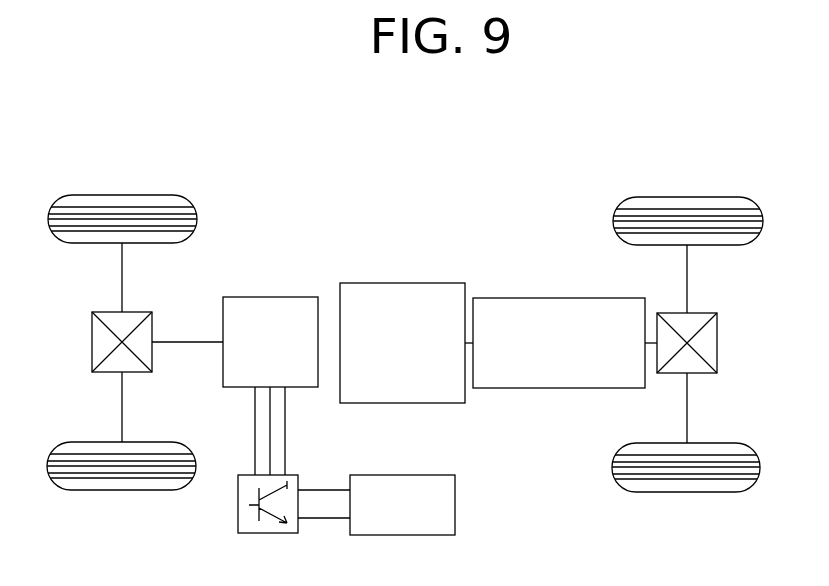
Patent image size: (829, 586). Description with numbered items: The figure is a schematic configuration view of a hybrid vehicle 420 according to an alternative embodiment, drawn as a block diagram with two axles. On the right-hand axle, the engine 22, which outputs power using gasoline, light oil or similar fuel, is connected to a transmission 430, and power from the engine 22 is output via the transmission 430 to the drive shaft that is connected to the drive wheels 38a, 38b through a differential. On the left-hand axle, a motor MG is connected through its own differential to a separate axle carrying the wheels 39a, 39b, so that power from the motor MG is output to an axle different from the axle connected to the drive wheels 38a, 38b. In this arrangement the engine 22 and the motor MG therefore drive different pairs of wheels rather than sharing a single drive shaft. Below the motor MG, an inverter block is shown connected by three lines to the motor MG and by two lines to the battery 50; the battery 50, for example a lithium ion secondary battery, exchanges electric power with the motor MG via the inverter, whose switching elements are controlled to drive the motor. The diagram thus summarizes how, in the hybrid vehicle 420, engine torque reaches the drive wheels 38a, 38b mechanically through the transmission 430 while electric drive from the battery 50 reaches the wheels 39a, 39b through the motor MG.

The hybrid vehicle 420 is at (497, 151).
The wheel 39a is at (123, 193).
The wheel 39b is at (120, 492).
The drive wheel 38a is at (688, 196).
The drive wheel 38b is at (685, 494).
The motor MG is at (273, 295).
The engine 22 is at (408, 281).
The transmission 430 is at (540, 297).
The battery 50 is at (403, 474).